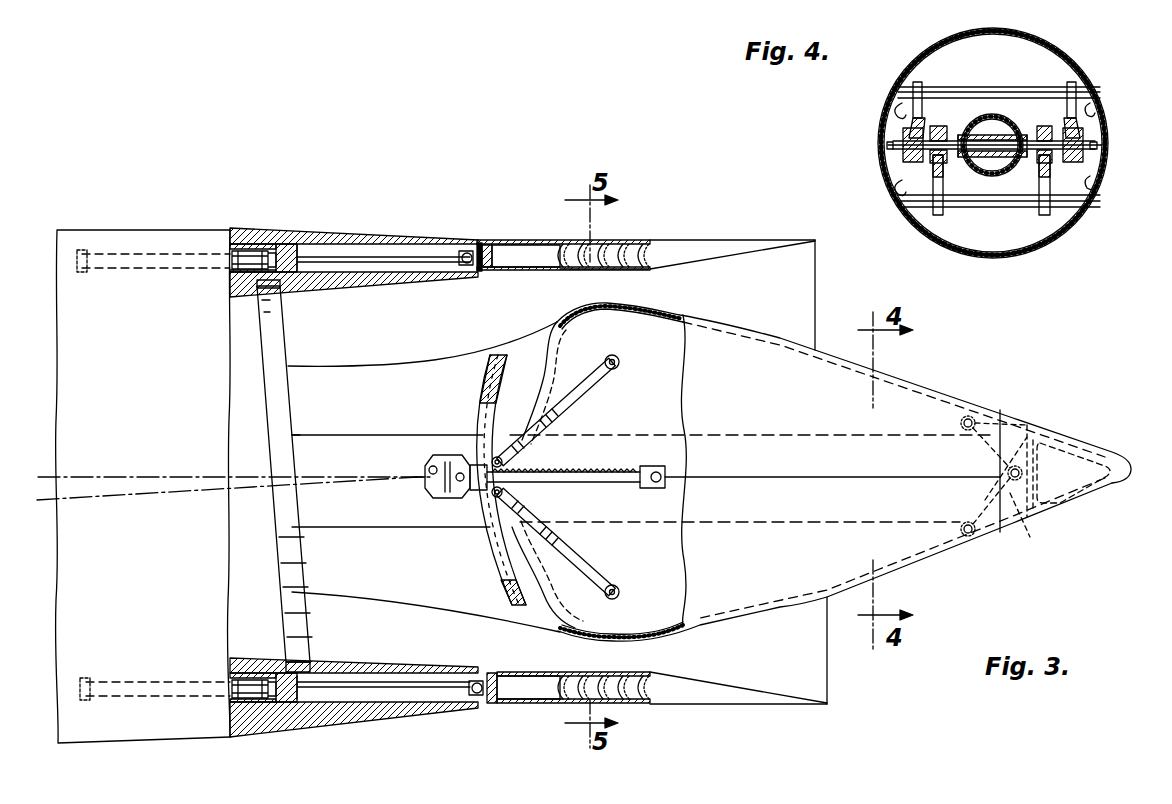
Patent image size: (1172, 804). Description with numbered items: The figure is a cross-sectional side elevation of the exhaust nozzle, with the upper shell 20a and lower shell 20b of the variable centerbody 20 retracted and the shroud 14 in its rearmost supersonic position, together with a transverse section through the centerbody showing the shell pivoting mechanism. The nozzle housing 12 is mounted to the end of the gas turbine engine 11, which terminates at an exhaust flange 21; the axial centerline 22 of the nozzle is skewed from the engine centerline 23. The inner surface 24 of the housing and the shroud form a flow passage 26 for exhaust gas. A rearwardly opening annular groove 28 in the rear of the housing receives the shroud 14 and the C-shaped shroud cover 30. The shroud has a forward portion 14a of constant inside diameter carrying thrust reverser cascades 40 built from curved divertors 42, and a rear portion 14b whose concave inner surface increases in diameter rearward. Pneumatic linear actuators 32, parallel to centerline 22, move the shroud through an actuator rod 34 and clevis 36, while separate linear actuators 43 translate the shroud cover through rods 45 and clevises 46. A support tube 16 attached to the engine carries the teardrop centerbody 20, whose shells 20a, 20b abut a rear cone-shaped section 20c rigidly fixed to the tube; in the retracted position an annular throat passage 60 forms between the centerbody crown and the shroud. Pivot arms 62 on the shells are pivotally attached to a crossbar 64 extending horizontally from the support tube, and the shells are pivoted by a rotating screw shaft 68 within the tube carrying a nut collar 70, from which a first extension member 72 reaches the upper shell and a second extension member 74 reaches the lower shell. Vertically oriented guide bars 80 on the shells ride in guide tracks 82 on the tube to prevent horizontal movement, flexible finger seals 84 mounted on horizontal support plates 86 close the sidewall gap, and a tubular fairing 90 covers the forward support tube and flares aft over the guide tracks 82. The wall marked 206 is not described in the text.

In FIG. 3, the gas turbine engine 11 is at (70, 232).
In FIG. 3, the nozzle housing 12 is at (270, 235).
In FIG. 3, the shroud 14 is at (683, 240).
In FIG. 3, the forward portion of shroud 14a is at (517, 240).
In FIG. 3, the rear portion of shroud 14b is at (747, 240).
In FIG. 4, the support tube 16 is at (991, 177).
In FIG. 3, the centerbody 20 is at (980, 406).
In FIG. 3, the upper shell 20a is at (738, 337).
In FIG. 4, the upper shell 20a is at (1044, 42).
In FIG. 3, the lower shell 20b is at (788, 612).
In FIG. 3, the cone-shaped section 20c is at (1080, 460).
In FIG. 3, the exhaust flange 21 is at (283, 347).
In FIG. 3, the axial centerline 22 is at (40, 475).
In FIG. 3, the centerline 23 is at (38, 498).
In FIG. 3, the inner surface 24 is at (337, 661).
In FIG. 3, the flow passage 26 is at (367, 337).
In FIG. 3, the annular groove 28 is at (347, 247).
In FIG. 3, the shroud cover 30 is at (600, 240).
In FIG. 3, the linear actuators 32 is at (138, 700).
In FIG. 3, the actuator rod 34 is at (378, 697).
In FIG. 3, the clevis 36 is at (478, 706).
In FIG. 3, the thrust reverser cascades 40 is at (590, 270).
In FIG. 3, the curved divertors 42 is at (666, 250).
In FIG. 3, the linear actuators 43 is at (133, 253).
In FIG. 3, the rods 45 is at (425, 253).
In FIG. 3, the clevises 46 is at (480, 270).
In FIG. 3, the throat passage 60 is at (755, 730).
In FIG. 3, the pivot arms 62 is at (1021, 416).
In FIG. 4, the pivot arms 62 is at (1090, 110).
In FIG. 3, the crossbar 64 is at (1050, 434).
In FIG. 4, the crossbar 64 is at (1092, 141).
In FIG. 3, the screw shaft 68 is at (594, 485).
In FIG. 3, the nut collar 70 is at (470, 492).
In FIG. 3, the first extension member 72 is at (562, 386).
In FIG. 3, the second extension member 74 is at (575, 573).
In FIG. 3, the guide bars 80 is at (490, 427).
In FIG. 3, the guide tracks 82 is at (487, 376).
In FIG. 4, the finger seals 84 is at (898, 118).
In FIG. 4, the support plates 86 is at (899, 168).
In FIG. 3, the fairing 90 is at (425, 363).
In FIG. 4, the hull wall 206 is at (1072, 230).